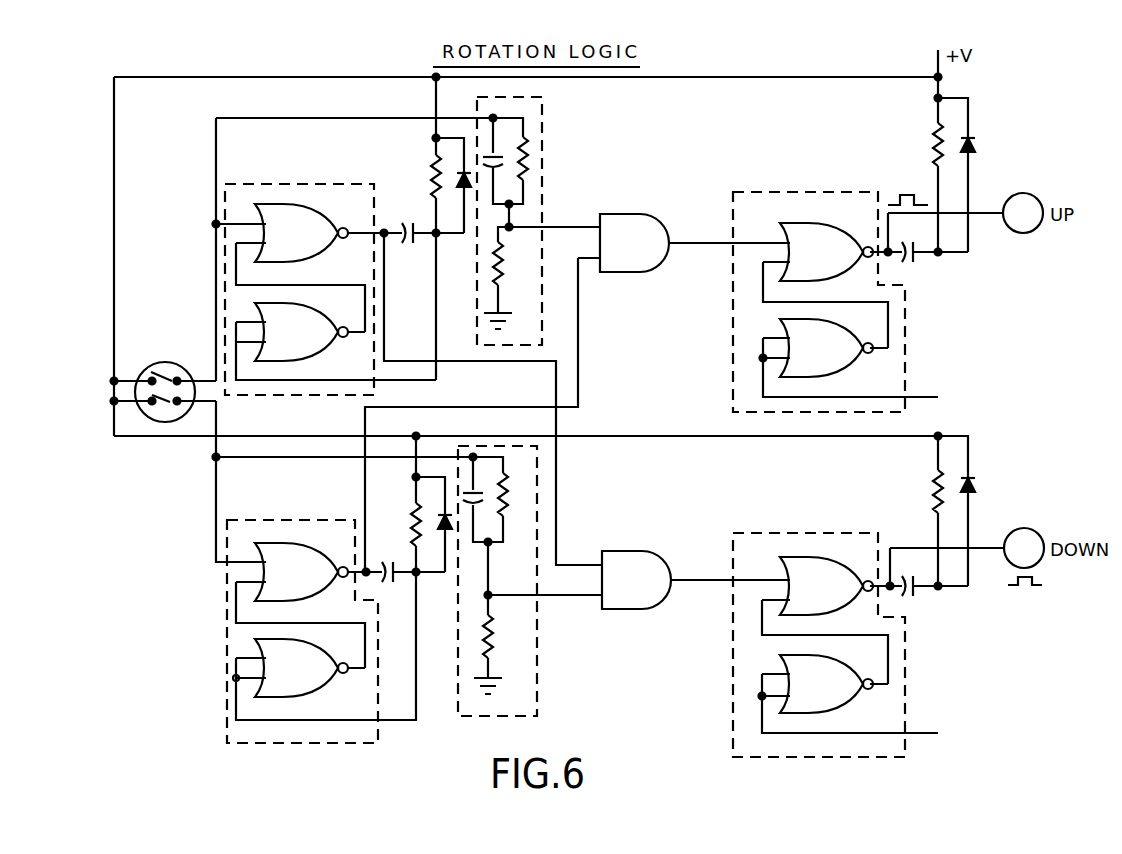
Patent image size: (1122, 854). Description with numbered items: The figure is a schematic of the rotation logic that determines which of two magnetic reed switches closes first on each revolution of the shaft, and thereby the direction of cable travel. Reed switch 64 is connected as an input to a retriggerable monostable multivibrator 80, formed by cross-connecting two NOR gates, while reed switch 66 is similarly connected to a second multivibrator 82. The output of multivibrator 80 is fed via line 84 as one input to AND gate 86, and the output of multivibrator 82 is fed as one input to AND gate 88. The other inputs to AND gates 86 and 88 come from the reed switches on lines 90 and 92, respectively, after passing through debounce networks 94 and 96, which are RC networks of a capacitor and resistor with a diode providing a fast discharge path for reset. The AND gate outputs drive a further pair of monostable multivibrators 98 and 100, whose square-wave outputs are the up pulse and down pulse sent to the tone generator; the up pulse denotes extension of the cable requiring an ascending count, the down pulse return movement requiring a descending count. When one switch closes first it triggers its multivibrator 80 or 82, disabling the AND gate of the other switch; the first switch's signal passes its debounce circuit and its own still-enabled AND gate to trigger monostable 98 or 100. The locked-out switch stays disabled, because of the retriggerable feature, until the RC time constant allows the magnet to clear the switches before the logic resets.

The reed switch 64 is at (162, 372).
The reed switch 66 is at (167, 405).
The retriggerable monostable multivibrator 80 is at (314, 183).
The multivibrator 82 is at (235, 601).
The line 84 is at (556, 423).
The AND gate 86 is at (643, 548).
The AND gate 88 is at (647, 215).
The line 90 is at (306, 458).
The line 92 is at (236, 117).
The debounce network 94 is at (546, 131).
The debounce network 96 is at (537, 648).
The monostable multivibrator 98 is at (800, 190).
The monostable multivibrator 100 is at (834, 533).